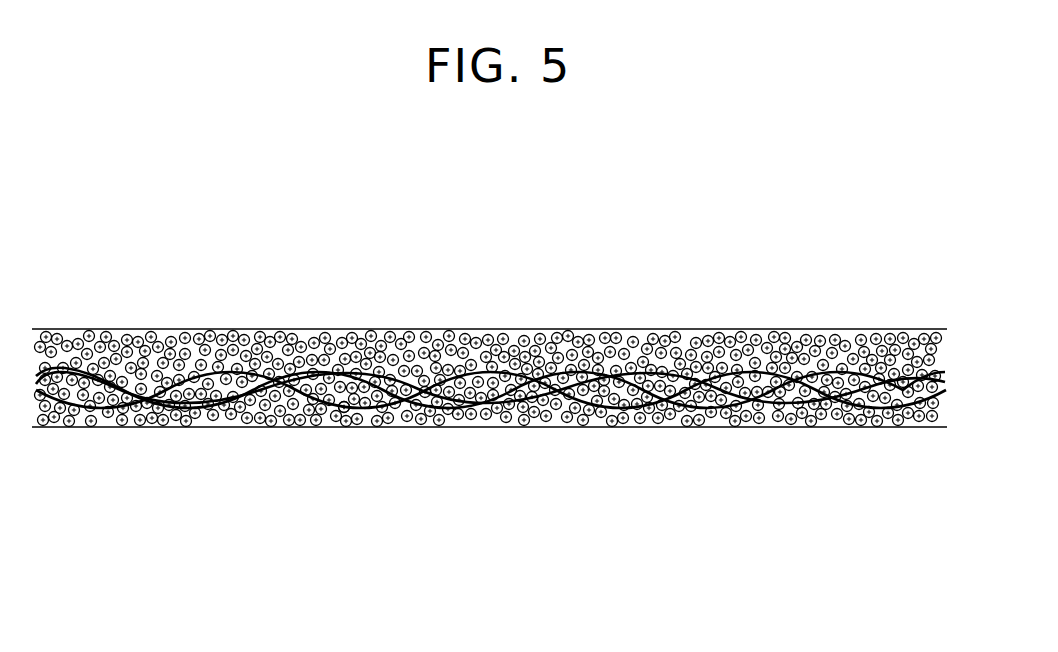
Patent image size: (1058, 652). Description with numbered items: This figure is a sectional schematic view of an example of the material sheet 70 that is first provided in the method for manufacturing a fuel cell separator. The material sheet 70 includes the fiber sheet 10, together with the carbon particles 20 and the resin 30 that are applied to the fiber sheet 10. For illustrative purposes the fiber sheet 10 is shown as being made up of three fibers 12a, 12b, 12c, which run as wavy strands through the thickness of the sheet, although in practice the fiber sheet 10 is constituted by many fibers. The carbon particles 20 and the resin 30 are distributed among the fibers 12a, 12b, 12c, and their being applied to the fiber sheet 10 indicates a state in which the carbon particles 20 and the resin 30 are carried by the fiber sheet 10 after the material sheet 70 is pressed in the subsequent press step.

The material sheet 70 is at (840, 247).
The fiber sheet 10 is at (491, 483).
The fiber 12a is at (634, 418).
The fiber 12b is at (668, 415).
The fiber 12c is at (607, 545).
The carbon particles 20 is at (490, 418).
The resin 30 is at (341, 413).